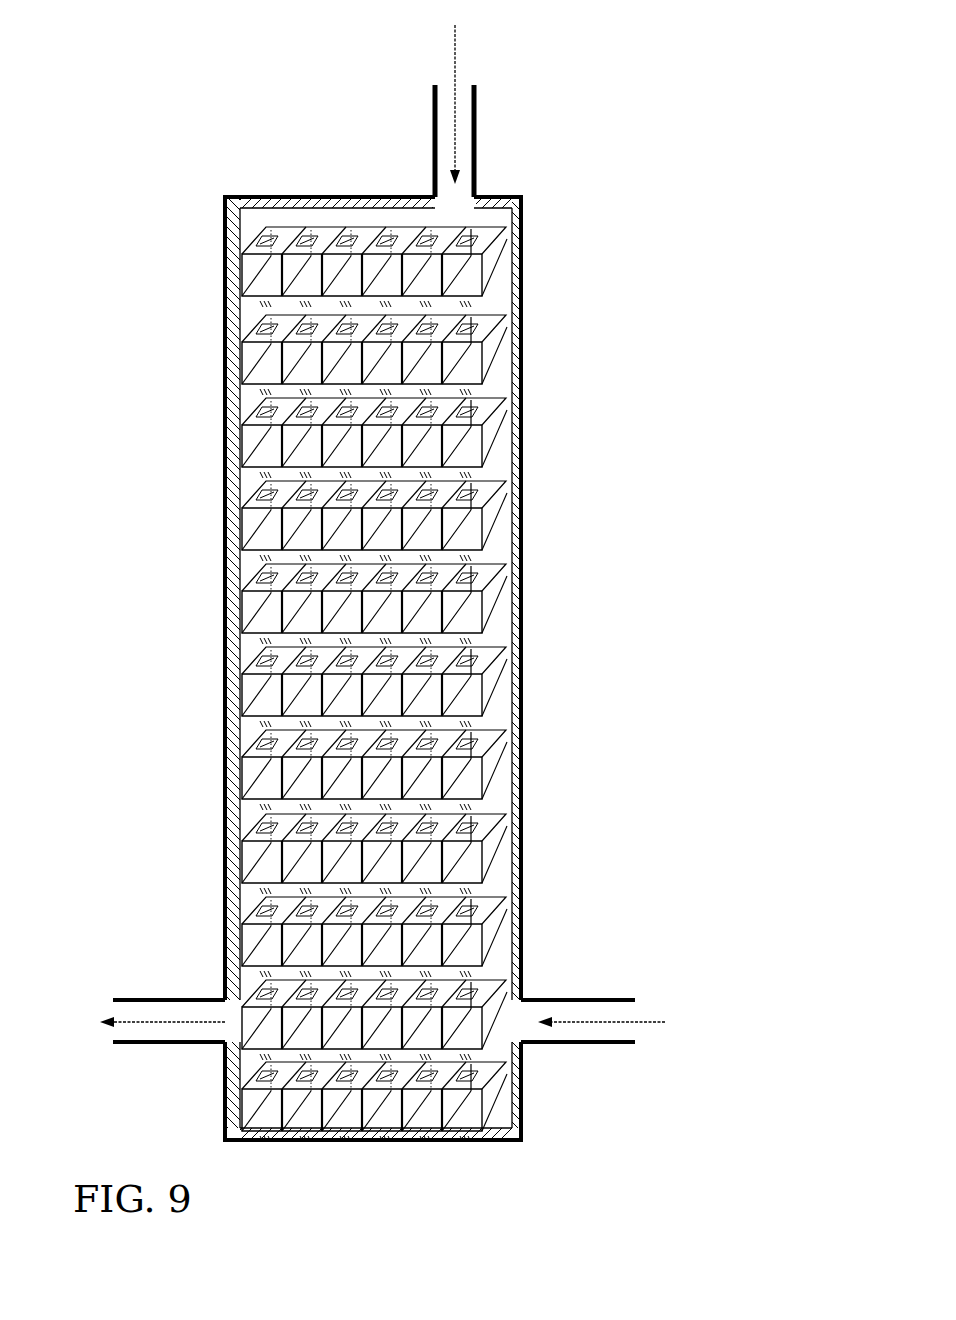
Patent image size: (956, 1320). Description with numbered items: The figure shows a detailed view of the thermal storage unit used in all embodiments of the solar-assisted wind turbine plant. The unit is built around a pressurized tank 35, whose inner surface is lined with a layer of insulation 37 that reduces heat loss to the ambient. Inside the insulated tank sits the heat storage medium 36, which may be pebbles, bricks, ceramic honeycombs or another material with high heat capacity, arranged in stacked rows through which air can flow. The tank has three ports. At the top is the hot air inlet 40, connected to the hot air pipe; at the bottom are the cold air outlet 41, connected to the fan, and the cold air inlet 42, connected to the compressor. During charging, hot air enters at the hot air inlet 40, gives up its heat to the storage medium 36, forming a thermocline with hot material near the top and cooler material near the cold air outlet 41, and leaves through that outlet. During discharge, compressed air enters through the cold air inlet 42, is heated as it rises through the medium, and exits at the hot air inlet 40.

The pressurized tank 35 is at (233, 195).
The heat storage medium 36 is at (232, 605).
The insulation 37 is at (235, 360).
The hot air inlet 40 is at (477, 105).
The cold air outlet 41 is at (135, 1045).
The cold air inlet from compressor 42 is at (587, 1045).